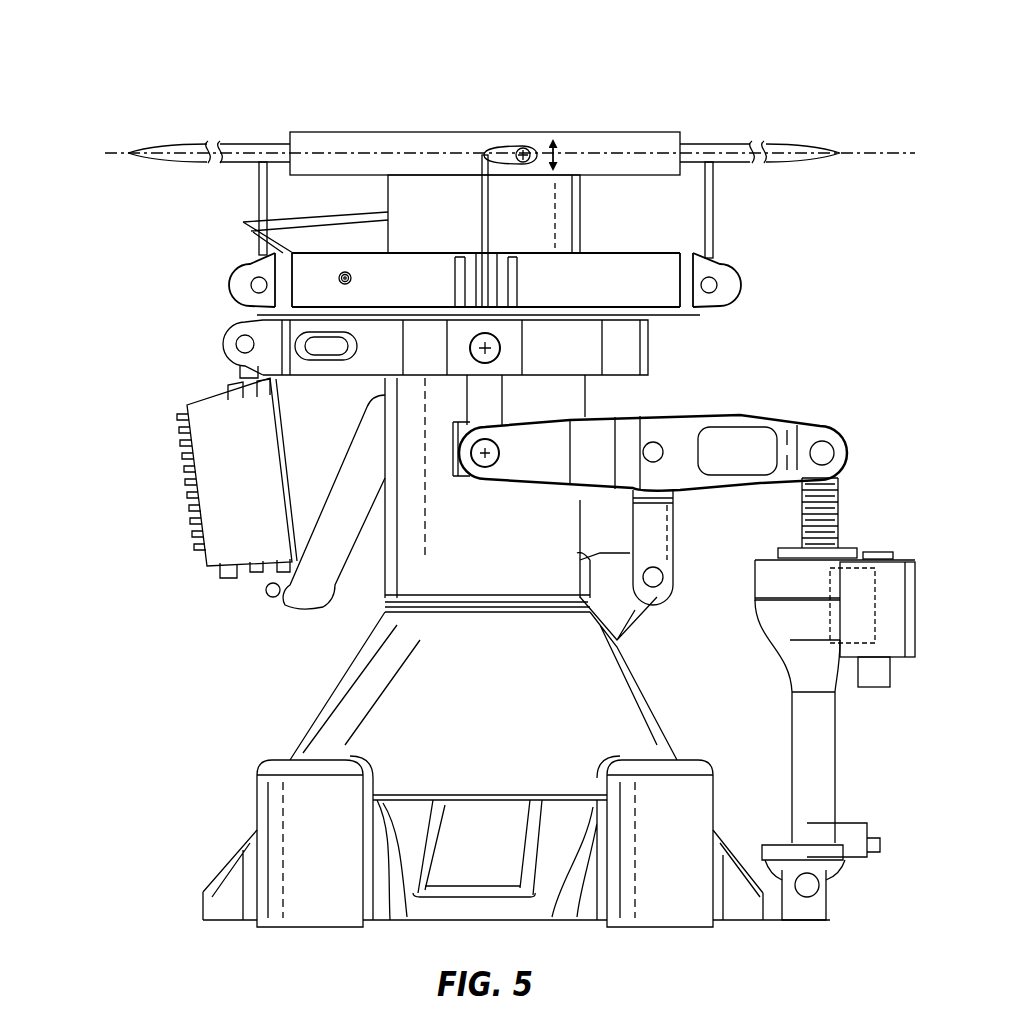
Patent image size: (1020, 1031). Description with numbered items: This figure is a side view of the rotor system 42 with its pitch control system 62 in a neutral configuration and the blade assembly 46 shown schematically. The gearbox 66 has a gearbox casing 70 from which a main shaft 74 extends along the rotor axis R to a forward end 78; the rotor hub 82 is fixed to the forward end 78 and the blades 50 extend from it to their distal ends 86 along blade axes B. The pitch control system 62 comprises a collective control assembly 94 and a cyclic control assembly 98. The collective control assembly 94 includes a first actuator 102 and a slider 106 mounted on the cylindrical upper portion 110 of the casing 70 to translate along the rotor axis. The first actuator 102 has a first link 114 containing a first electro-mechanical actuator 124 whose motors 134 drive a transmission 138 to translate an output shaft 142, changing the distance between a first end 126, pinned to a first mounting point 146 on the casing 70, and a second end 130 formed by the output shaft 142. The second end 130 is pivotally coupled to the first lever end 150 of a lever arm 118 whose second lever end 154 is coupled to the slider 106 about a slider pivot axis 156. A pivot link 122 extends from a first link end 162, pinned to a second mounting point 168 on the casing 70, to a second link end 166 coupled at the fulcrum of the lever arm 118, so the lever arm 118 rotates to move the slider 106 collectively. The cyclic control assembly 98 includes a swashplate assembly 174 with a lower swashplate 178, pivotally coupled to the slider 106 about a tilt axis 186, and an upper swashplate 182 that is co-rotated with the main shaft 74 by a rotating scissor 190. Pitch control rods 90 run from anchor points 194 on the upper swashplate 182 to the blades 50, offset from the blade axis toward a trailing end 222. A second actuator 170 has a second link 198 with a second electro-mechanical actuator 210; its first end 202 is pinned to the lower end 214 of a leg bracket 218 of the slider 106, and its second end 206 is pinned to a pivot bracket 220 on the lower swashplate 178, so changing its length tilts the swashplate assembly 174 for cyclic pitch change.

The rotor system 42 is at (298, 60).
The blade assembly 46 is at (576, 82).
The blades 50 is at (240, 150).
The pitch control system 62 is at (100, 66).
The gearbox 66 is at (240, 860).
The gearbox casing 70 is at (275, 808).
The main shaft 74 is at (565, 213).
The forward end 78 is at (388, 178).
The rotor hub 82 is at (420, 155).
The distal end 86 is at (140, 150).
The pitch control rods 90 is at (484, 205).
The collective control assembly 94 is at (870, 350).
The cyclic control assembly 98 is at (115, 332).
The first actuator 102 is at (890, 745).
The slider 106 is at (575, 395).
The upper portion 110 is at (562, 527).
The first link 114 is at (795, 683).
The lever arm 118 is at (790, 430).
The pivot link 122 is at (660, 525).
The first electro-mechanical actuator 124 is at (915, 580).
The first end 126 is at (835, 880).
The second end 130 is at (848, 455).
The motors 134 is at (893, 587).
The transmission 138 is at (878, 635).
The output shaft 142 is at (838, 490).
The first mounting point 146 is at (803, 895).
The first lever end 150 is at (808, 438).
The second lever end 154 is at (505, 460).
The slider pivot axis 156 is at (473, 485).
The first link end 162 is at (660, 586).
The second link end 166 is at (660, 452).
The second mounting point 168 is at (630, 612).
The second actuator 170 is at (178, 580).
The swashplate assembly 174 is at (375, 285).
The lower swashplate 178 is at (628, 348).
The upper swashplate 182 is at (614, 280).
The tilt axis 186 is at (502, 345).
The rotating scissor 190 is at (243, 222).
The anchor points 194 is at (245, 298).
The second link 198 is at (252, 470).
The first end 202 is at (266, 598).
The second end 206 is at (245, 346).
The second electro-mechanical actuator 210 is at (228, 530).
The lower end 214 is at (310, 595).
The leg bracket 218 is at (348, 545).
The pivot bracket 220 is at (230, 335).
The trailing end 222 is at (496, 150).